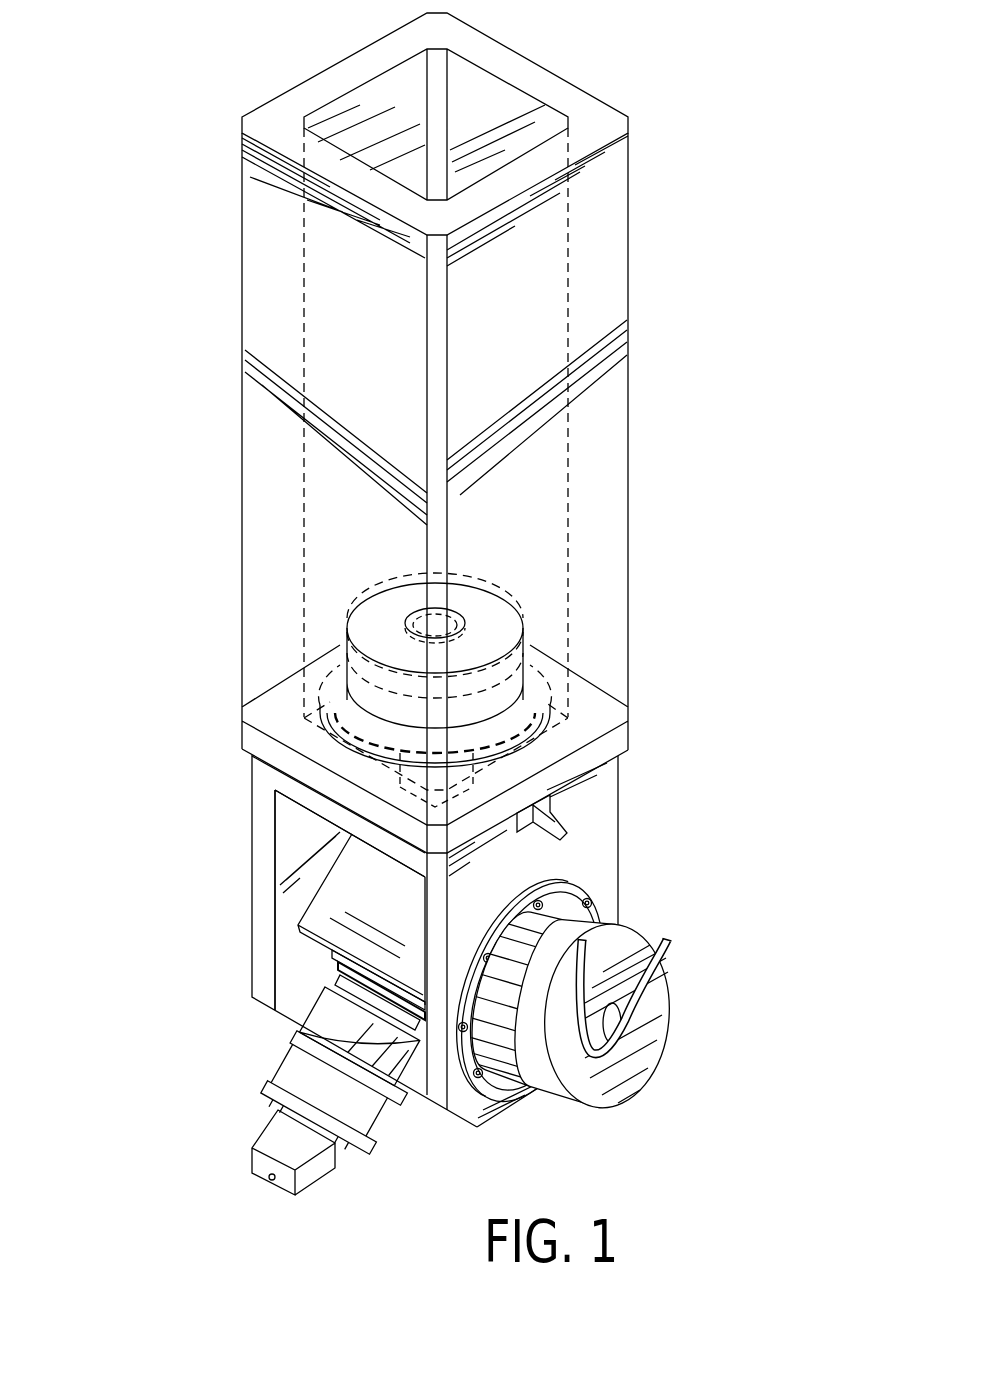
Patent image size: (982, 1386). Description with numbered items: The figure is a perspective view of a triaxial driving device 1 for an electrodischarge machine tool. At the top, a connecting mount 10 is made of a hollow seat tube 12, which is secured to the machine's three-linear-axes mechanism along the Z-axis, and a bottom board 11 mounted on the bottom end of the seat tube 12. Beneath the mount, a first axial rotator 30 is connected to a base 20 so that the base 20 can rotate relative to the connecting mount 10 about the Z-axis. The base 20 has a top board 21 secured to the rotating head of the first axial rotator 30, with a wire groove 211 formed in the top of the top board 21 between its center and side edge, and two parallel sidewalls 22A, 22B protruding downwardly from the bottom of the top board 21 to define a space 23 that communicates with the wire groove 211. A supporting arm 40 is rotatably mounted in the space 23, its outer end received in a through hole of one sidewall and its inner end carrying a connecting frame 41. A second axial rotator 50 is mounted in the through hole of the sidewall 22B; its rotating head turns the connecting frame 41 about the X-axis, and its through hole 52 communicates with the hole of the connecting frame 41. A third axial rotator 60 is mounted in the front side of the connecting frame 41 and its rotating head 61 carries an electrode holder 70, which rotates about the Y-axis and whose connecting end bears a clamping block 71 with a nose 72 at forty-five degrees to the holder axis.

The triaxial driving device 1 is at (445, 633).
The connecting mount 10 is at (489, 561).
The bottom board 11 is at (612, 742).
The seat tube 12 is at (435, 561).
The base 20 is at (425, 936).
The top board 21 is at (297, 790).
The sidewall 22A is at (263, 824).
The sidewall 22B is at (483, 1107).
The space 23 is at (310, 830).
The wire groove 211 is at (552, 808).
The first axial rotator 30 is at (479, 565).
The supporting arm 40 is at (300, 940).
The connecting frame 41 is at (335, 977).
The second axial rotator 50 is at (571, 1005).
The through hole 52 is at (605, 1045).
The third axial rotator 60 is at (375, 1000).
The rotating head 61 is at (380, 1005).
The electrode holder 70 is at (291, 1120).
The clamping block 71 is at (330, 1152).
The nose 72 is at (303, 1183).